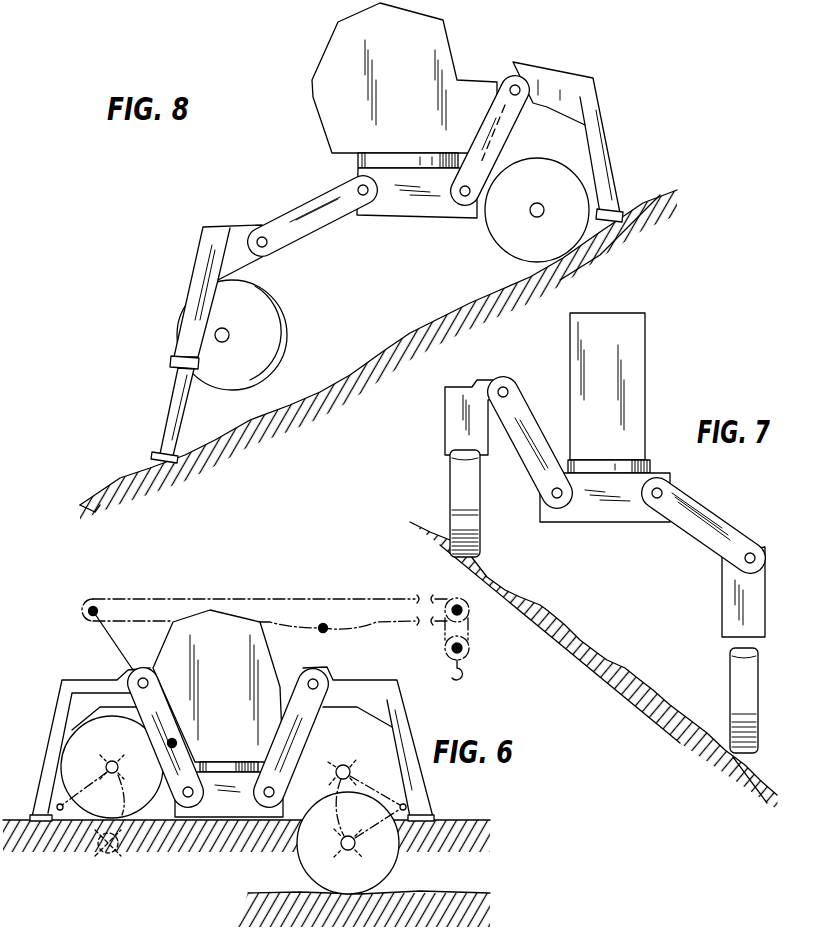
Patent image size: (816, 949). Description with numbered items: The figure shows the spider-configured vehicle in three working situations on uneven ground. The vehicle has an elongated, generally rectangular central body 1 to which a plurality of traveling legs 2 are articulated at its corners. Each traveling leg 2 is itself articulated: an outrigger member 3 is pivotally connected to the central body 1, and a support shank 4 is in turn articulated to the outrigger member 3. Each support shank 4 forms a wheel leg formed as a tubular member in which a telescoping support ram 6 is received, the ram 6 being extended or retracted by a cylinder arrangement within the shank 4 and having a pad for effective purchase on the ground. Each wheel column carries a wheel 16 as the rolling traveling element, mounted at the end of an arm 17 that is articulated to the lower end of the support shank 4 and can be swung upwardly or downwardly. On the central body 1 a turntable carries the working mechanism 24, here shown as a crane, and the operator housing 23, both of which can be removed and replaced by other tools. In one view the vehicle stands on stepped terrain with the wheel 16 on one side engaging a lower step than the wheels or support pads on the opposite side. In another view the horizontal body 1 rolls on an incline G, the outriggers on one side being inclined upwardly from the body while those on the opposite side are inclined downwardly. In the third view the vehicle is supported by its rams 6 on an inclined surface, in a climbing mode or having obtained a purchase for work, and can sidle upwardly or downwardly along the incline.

In FIG. 8, the operator housing 23 is at (452, 32).
In FIG. 7, the operator housing 23 is at (645, 368).
In FIG. 8, the traveling leg 2 is at (578, 145).
In FIG. 7, the traveling leg 2 is at (705, 568).
In FIG. 8, the outrigger member 3 is at (323, 223).
In FIG. 8, the support shank 4 is at (198, 292).
In FIG. 8, the telescoping support ram 6 is at (172, 408).
In FIG. 8, the wheel 16 is at (280, 327).
In FIG. 6, the wheel 16 is at (390, 867).
In FIG. 7, the central body 1 is at (604, 513).
In FIG. 7, the incline G is at (560, 618).
In FIG. 6, the working mechanism 24 is at (327, 597).
In FIG. 6, the arm 17 is at (374, 790).